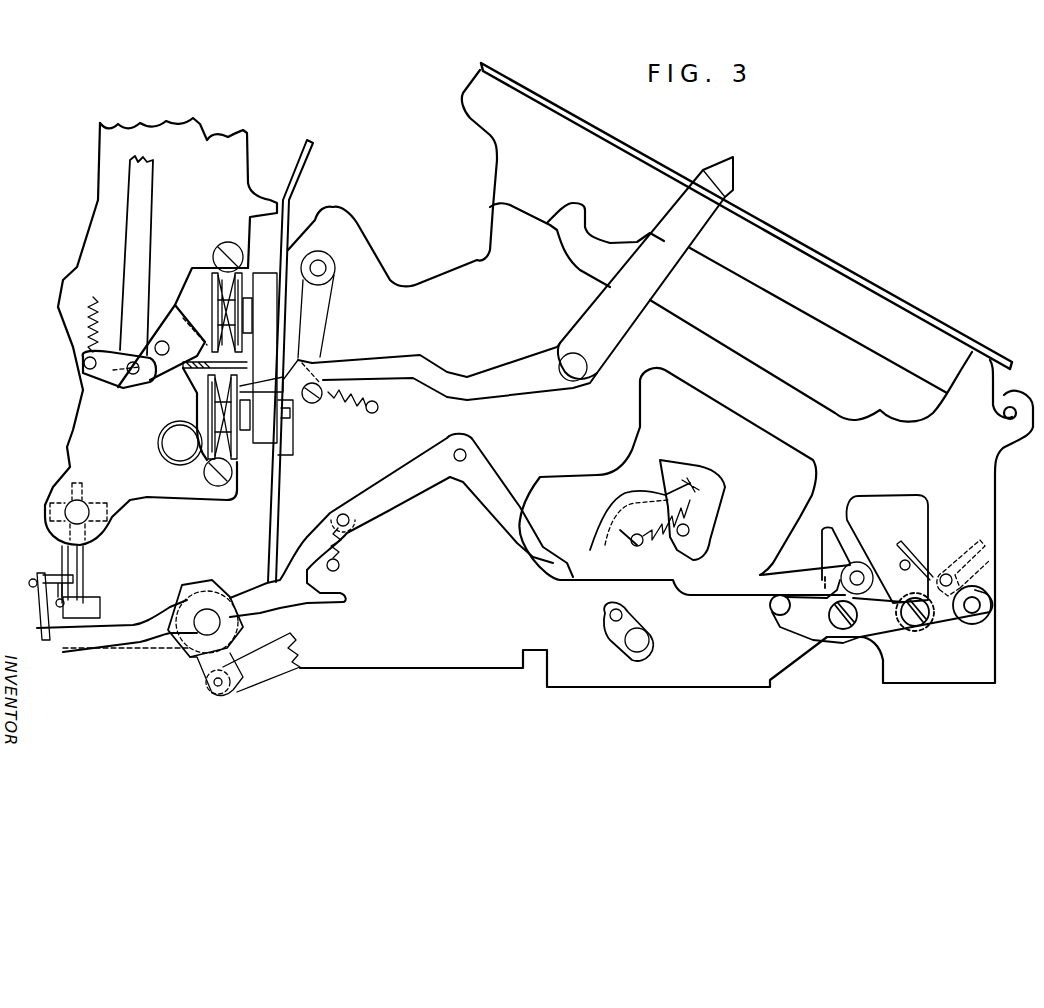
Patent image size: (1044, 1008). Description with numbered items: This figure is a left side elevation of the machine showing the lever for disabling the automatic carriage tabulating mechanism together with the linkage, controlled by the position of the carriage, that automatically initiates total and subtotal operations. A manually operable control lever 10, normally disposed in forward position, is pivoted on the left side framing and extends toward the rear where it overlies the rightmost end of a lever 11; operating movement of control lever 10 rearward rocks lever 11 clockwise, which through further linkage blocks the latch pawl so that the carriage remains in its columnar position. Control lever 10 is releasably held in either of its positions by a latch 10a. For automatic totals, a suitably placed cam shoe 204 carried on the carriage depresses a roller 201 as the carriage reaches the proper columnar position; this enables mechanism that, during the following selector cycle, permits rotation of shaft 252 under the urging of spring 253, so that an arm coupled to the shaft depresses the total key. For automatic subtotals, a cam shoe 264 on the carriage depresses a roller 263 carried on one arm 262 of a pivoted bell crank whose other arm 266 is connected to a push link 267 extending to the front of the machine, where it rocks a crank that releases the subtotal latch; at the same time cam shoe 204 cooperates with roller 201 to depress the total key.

The control lever 10 is at (706, 164).
The latch 10a is at (313, 318).
The lever 11 is at (289, 418).
The cam shoe 264 is at (50, 514).
The cam shoe 204 is at (87, 562).
The arm 262 is at (150, 620).
The roller 263 is at (50, 645).
The roller 201 is at (87, 619).
The arm 266 is at (200, 672).
The push link 267 is at (283, 670).
The spring 253 is at (913, 547).
The shaft 252 is at (947, 572).